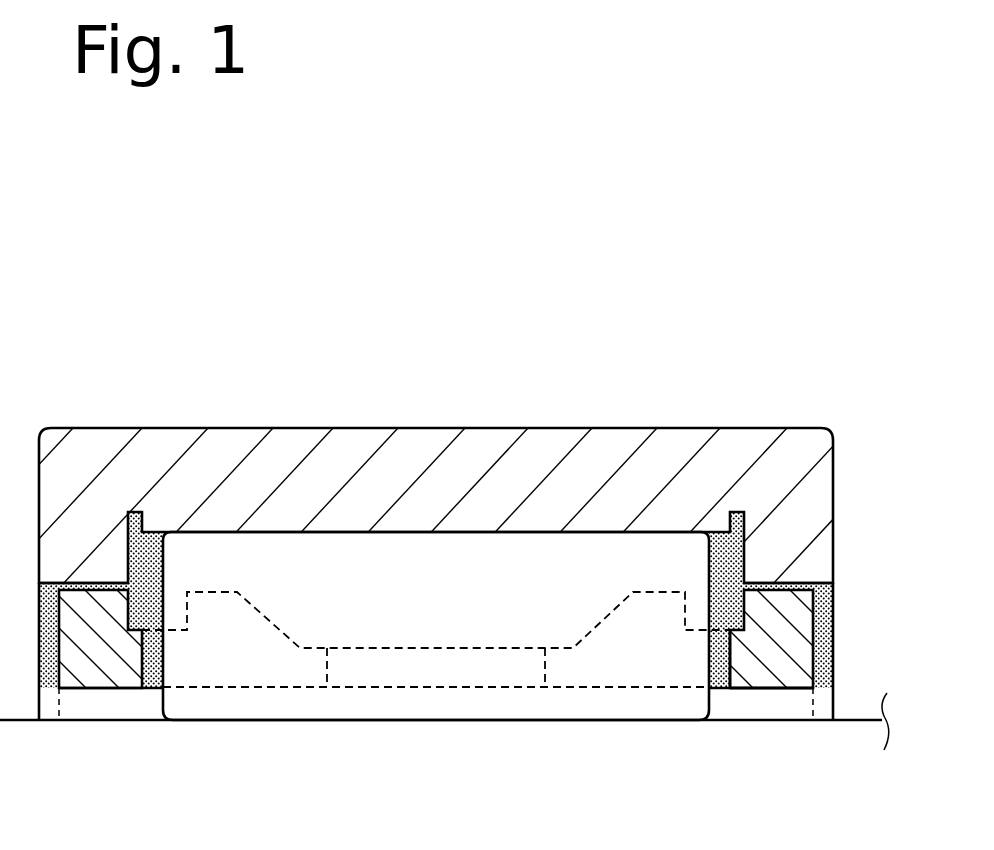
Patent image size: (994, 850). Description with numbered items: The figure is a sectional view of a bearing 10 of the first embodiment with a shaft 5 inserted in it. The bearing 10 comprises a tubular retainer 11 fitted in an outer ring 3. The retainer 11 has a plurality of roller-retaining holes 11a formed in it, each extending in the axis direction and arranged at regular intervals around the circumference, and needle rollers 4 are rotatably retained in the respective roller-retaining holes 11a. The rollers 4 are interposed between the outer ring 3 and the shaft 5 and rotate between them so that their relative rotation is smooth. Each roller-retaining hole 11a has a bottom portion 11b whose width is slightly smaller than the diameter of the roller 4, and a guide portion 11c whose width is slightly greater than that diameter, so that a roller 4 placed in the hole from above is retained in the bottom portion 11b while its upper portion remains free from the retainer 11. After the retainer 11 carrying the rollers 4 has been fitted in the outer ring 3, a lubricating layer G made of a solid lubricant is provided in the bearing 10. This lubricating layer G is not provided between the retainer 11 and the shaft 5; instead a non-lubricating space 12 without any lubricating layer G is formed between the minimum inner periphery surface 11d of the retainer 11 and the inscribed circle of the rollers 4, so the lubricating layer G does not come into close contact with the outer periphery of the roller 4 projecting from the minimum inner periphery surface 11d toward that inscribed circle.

The bearing 10 is at (801, 408).
The outer ring 3 is at (233, 440).
The needle roller 4 is at (436, 579).
The lubricating layer G is at (152, 527).
The shaft 5 is at (22, 733).
The retainer 11 is at (800, 648).
The roller-retaining hole 11a is at (730, 648).
The bottom portion 11b is at (467, 678).
The guide portion 11c is at (605, 673).
The minimum inner periphery surface 11d is at (772, 687).
The non-lubricating space 12 is at (112, 707).